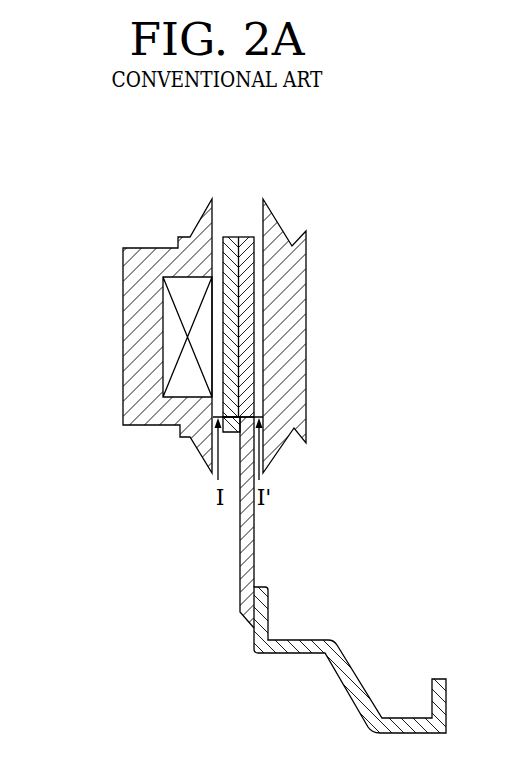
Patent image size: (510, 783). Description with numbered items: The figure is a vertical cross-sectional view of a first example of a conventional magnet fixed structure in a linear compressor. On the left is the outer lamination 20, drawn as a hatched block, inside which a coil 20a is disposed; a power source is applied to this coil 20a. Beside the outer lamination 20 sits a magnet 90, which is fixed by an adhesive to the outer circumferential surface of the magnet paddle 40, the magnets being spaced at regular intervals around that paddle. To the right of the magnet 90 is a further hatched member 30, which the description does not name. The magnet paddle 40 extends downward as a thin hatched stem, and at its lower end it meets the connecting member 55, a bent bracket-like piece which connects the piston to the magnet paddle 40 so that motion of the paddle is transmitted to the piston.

The outer lamination 20 is at (148, 248).
The coil 20a is at (167, 337).
The magnet 90 is at (231, 237).
The rotor 30 is at (277, 223).
The magnet paddle 40 is at (247, 595).
The connecting member 55 is at (283, 655).